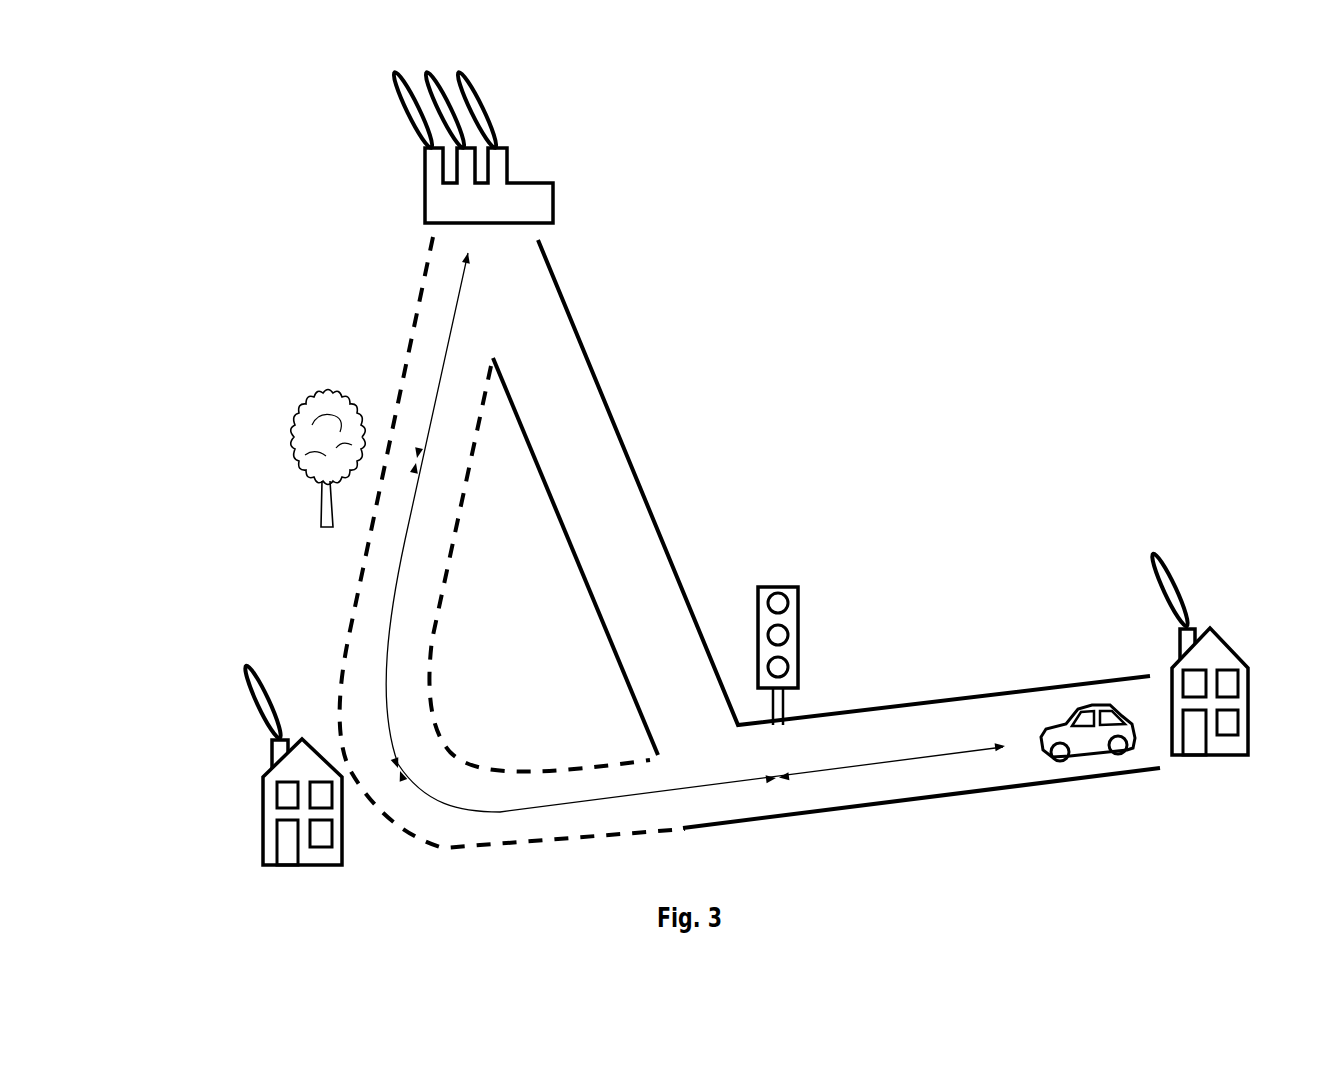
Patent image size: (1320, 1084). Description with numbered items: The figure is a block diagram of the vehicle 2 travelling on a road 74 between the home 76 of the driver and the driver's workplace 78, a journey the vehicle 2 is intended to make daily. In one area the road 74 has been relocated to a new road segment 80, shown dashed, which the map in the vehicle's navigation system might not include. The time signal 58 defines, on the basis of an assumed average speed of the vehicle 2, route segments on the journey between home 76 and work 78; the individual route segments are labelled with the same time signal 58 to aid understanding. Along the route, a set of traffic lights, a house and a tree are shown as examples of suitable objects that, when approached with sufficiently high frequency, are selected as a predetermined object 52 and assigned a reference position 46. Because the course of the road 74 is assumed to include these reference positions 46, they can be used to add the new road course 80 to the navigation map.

The vehicle 2 is at (1085, 705).
The reference position 46 is at (502, 600).
The predetermined object 52 is at (307, 402).
The time signal 58 is at (445, 348).
The road 74 is at (937, 715).
The home 76 is at (1240, 660).
The workplace 78 is at (523, 185).
The new road segment 80 is at (413, 645).